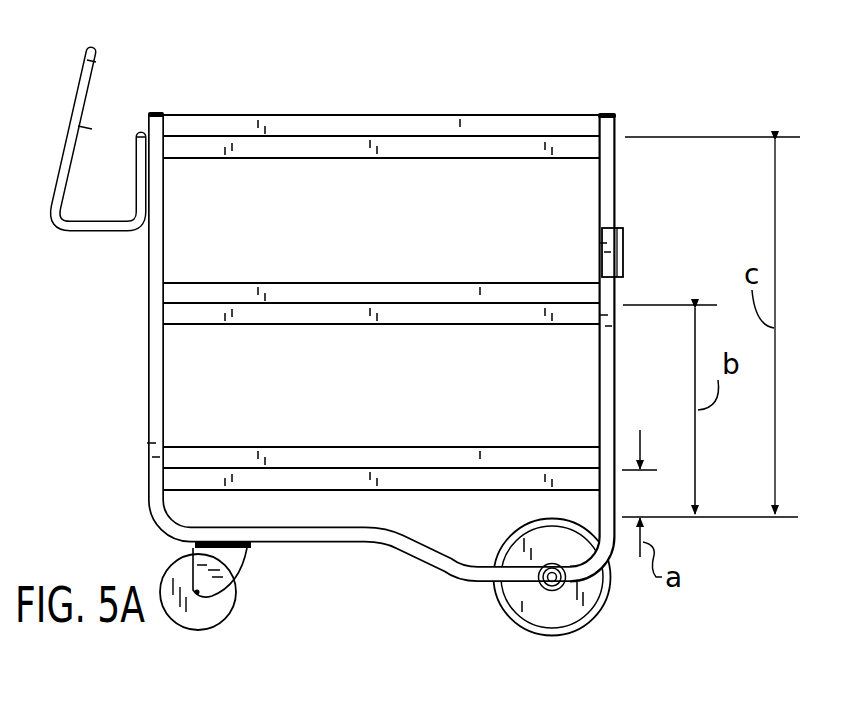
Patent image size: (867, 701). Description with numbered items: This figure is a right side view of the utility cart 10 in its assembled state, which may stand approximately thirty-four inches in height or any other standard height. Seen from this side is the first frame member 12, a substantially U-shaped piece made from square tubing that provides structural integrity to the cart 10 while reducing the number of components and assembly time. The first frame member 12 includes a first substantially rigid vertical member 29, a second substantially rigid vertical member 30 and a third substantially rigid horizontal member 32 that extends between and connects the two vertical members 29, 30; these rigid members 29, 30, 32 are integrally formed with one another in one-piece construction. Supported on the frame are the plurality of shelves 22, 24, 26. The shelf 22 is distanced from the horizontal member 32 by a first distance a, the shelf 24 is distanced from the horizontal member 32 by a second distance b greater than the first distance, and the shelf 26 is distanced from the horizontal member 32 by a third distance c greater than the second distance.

The cart 10 is at (621, 68).
The first frame member 12 is at (607, 345).
The shelf 22 is at (310, 458).
The shelf 24 is at (408, 285).
The shelf 26 is at (481, 143).
The first substantially rigid, vertical member 29 is at (605, 136).
The second substantially rigid, vertical member 30 is at (155, 128).
The third substantially rigid, horizontal member 32 is at (313, 535).